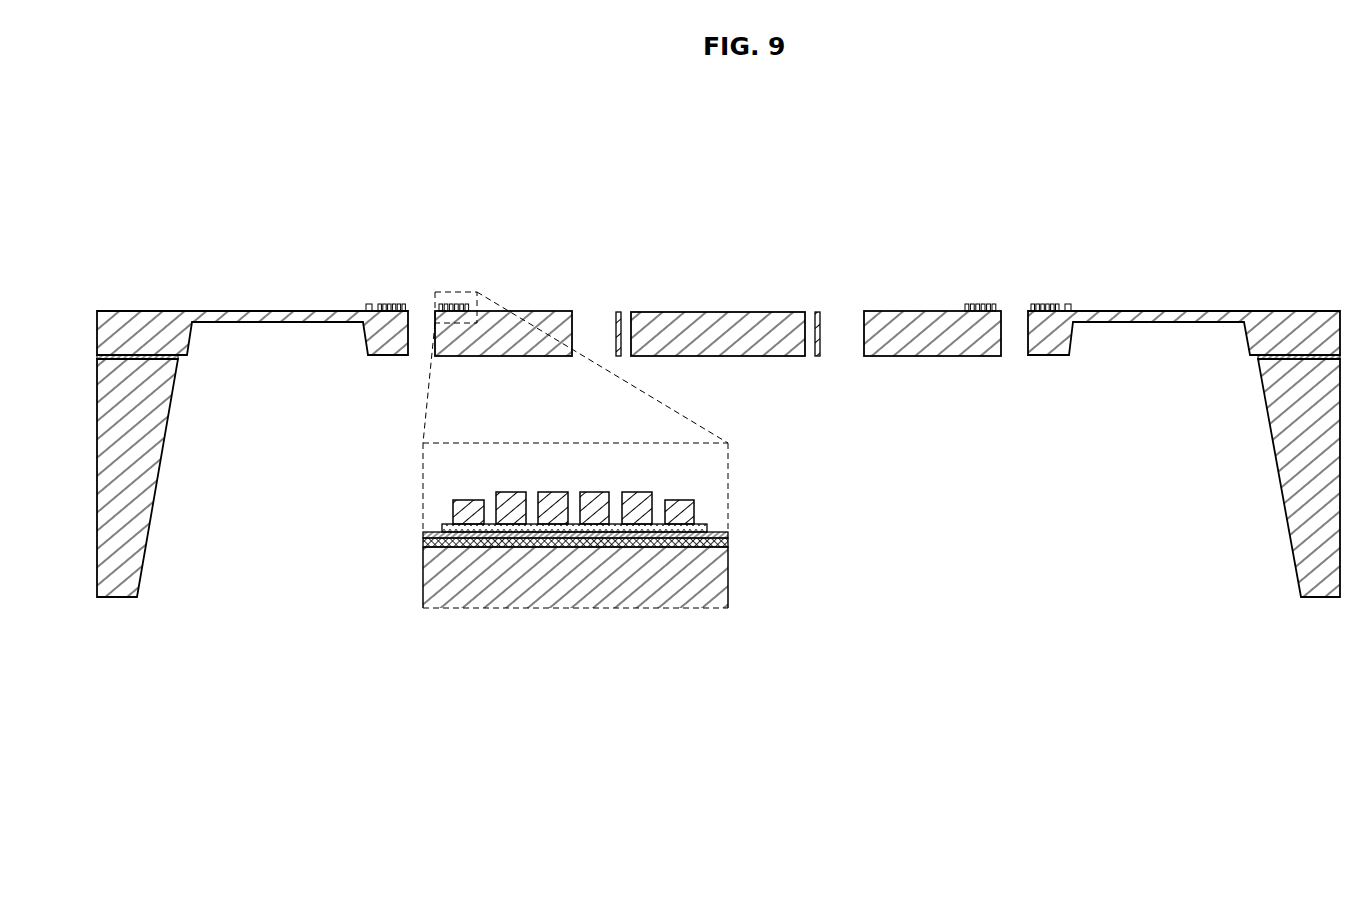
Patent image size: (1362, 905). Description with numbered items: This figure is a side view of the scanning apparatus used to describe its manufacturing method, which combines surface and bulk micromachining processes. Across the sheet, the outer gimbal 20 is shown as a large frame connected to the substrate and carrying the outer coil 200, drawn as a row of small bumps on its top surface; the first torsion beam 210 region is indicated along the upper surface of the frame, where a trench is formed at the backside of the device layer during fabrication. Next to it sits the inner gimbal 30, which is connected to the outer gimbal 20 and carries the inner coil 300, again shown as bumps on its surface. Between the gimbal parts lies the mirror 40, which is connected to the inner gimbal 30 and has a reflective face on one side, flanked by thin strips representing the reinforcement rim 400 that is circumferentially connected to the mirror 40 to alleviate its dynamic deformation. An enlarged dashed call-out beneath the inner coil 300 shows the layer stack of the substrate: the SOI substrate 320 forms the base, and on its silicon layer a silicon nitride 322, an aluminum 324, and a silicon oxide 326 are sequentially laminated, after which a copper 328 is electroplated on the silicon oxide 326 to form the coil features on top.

The outer gimbal 20 is at (1053, 380).
The inner gimbal 30 is at (937, 380).
The mirror 40 is at (722, 298).
The outer coil 200 is at (385, 284).
The first torsion beam 210 is at (264, 299).
The inner coil 300 is at (481, 269).
The SOI substrate 320 is at (698, 580).
The silicon nitride 322 is at (424, 542).
The aluminum 324 is at (700, 528).
The silicon oxide 326 is at (443, 527).
The copper 328 is at (510, 500).
The reinforcement rim 400 is at (619, 311).